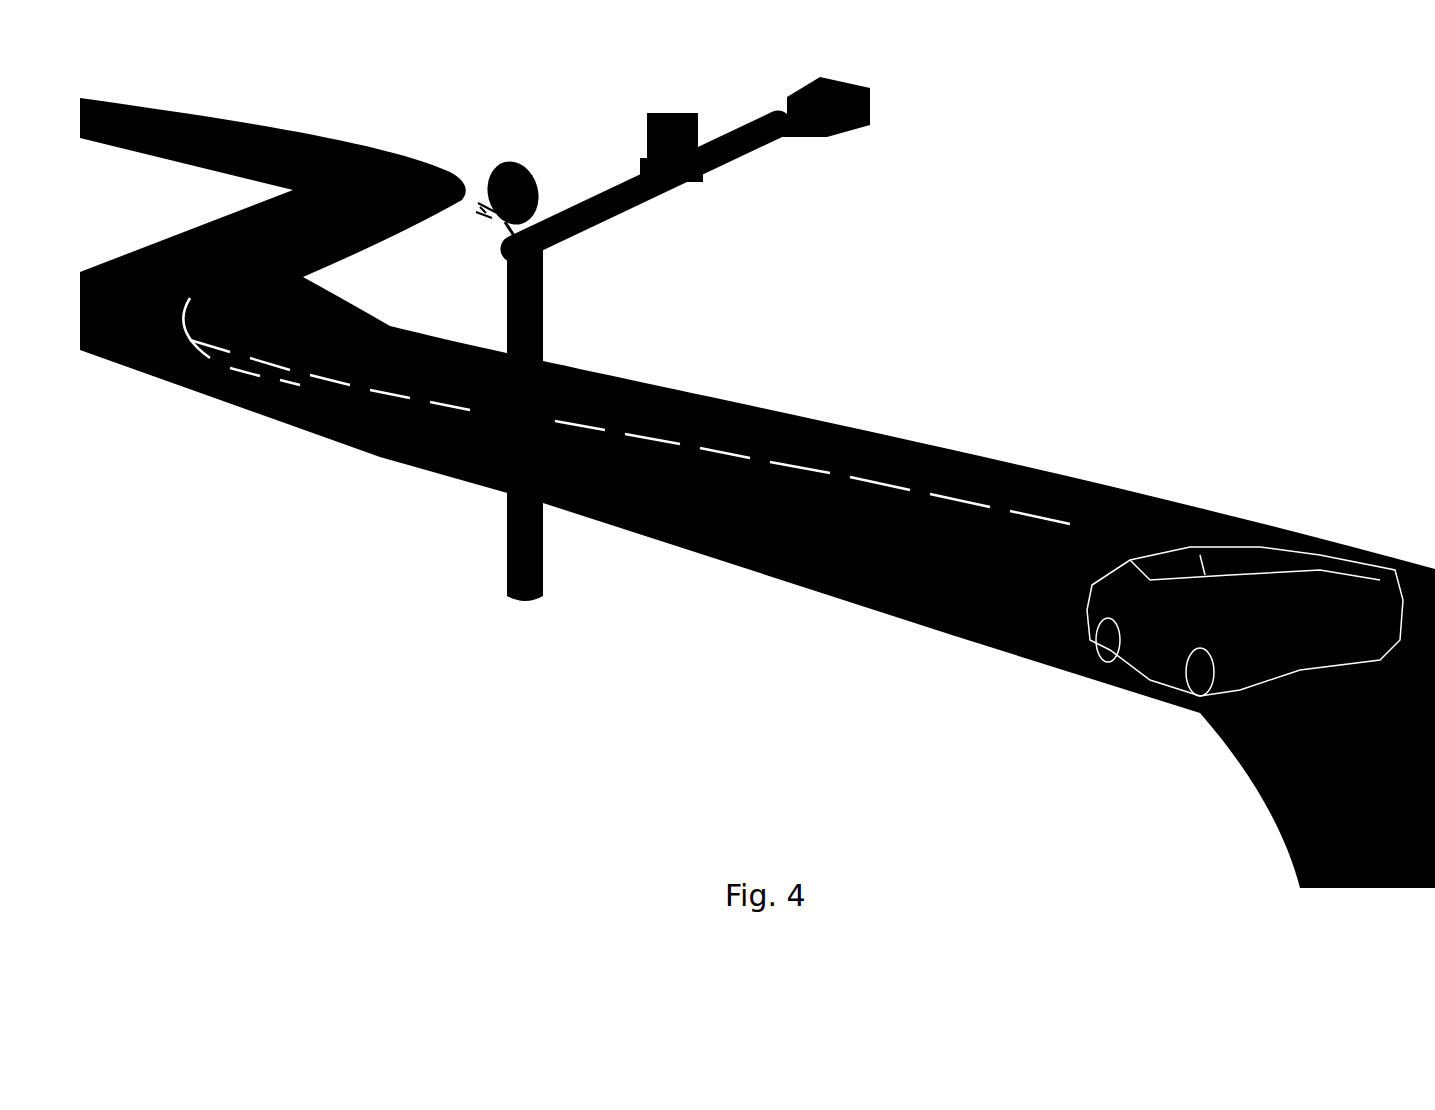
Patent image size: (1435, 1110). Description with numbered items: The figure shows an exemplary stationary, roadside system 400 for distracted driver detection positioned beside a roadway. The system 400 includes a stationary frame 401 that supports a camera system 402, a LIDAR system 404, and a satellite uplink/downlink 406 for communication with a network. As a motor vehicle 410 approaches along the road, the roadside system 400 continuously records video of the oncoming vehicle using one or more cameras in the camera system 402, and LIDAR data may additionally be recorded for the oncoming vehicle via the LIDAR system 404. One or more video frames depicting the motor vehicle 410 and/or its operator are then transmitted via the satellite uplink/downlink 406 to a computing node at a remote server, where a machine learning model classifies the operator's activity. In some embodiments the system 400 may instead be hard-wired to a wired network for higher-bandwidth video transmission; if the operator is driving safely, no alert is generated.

The stationary roadside system 400 is at (972, 112).
The stationary frame 401 is at (513, 510).
The camera system 402 is at (790, 100).
The LIDAR system 404 is at (662, 115).
The satellite uplink/downlink 406 is at (512, 190).
The motor vehicle 410 is at (1074, 672).